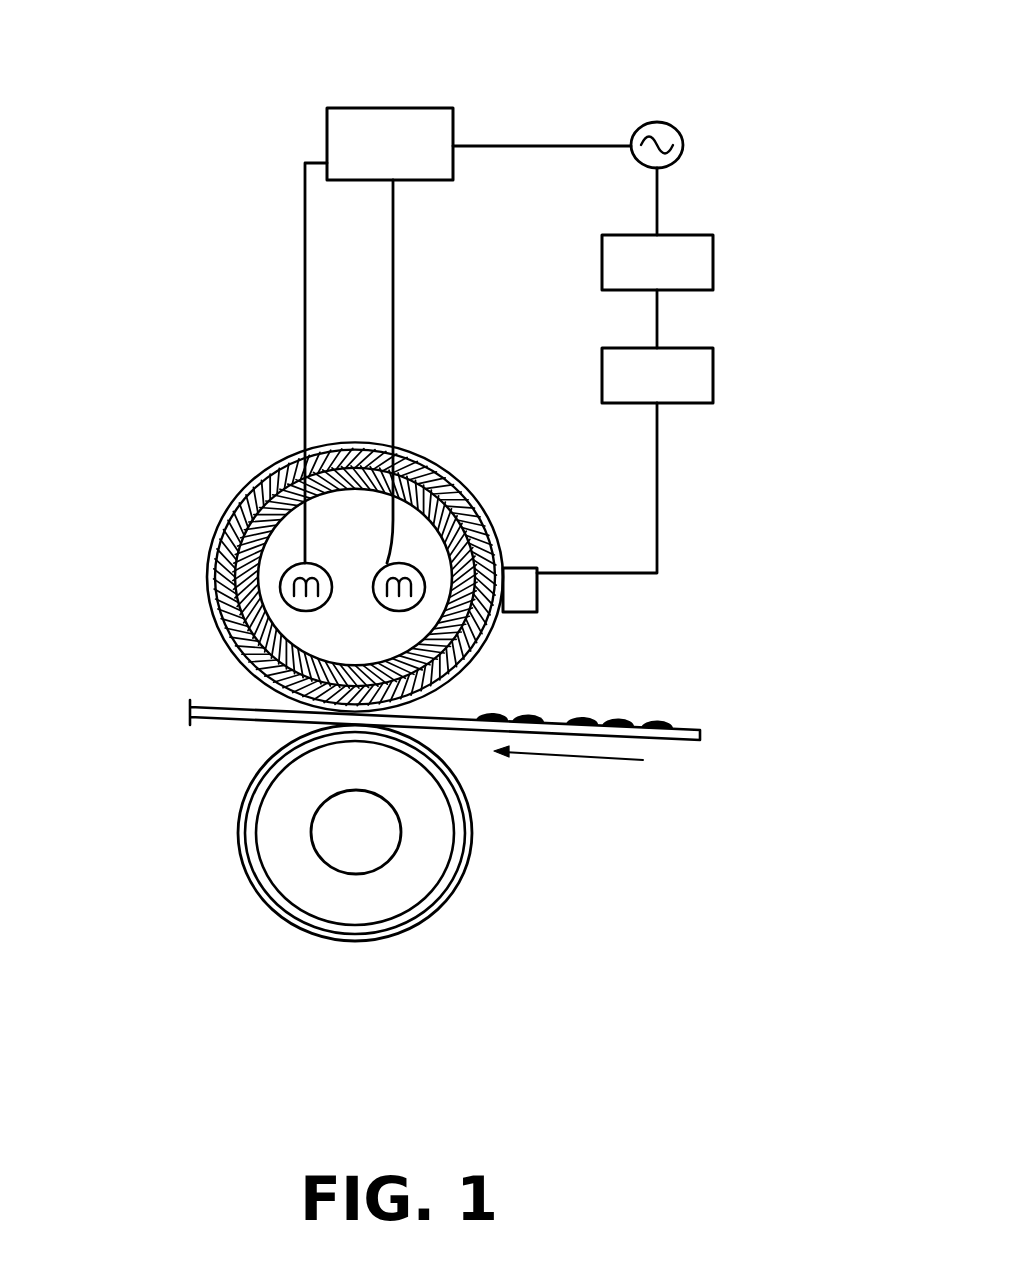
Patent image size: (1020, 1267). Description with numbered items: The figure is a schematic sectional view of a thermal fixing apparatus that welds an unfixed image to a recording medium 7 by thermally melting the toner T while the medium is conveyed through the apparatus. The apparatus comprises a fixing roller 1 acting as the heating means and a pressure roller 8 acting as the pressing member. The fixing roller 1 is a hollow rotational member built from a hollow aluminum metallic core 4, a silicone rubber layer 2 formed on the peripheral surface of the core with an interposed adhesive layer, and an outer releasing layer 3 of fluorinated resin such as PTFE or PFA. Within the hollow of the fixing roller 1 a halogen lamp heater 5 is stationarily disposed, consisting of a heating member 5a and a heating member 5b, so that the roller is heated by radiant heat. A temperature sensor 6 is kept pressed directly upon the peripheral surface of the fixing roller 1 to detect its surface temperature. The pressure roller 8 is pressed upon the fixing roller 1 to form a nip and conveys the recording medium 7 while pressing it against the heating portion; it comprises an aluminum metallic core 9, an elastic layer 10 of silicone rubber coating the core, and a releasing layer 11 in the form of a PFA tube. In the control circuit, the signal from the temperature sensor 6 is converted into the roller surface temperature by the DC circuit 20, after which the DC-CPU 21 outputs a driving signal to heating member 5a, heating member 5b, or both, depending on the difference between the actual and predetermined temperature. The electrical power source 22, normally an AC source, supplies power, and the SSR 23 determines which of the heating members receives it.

The fixing roller 1 is at (354, 428).
The silicone rubber layer 2 is at (267, 468).
The releasing layer 3 is at (213, 538).
The metallic core 4 is at (233, 505).
The heater 5 is at (382, 517).
The heating member 5a is at (306, 605).
The heating member 5b is at (399, 605).
The temperature sensor 6 is at (548, 592).
The recording medium 7 is at (215, 706).
The pressure roller 8 is at (343, 957).
The metallic core 9 is at (428, 855).
The elastic layer 10 is at (243, 828).
The releasing layer 11 is at (254, 880).
The DC circuit 20 is at (713, 373).
The DC-CPU 21 is at (713, 258).
The electrical power source 22 is at (684, 137).
The SSR 23 is at (383, 115).
The toner T is at (660, 722).